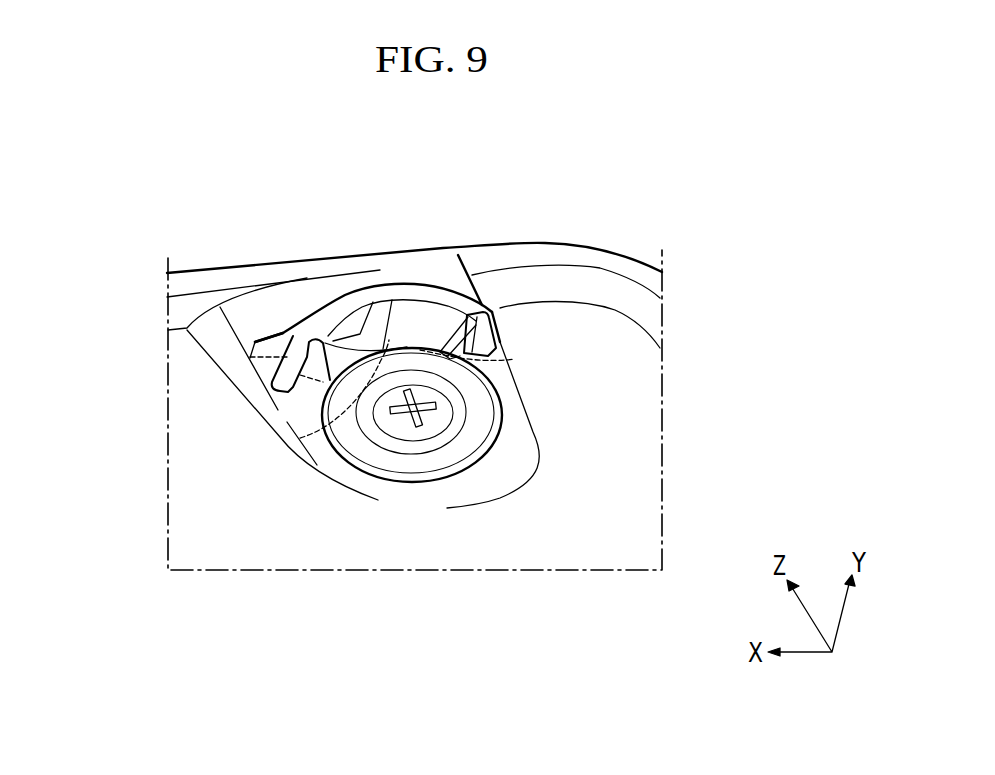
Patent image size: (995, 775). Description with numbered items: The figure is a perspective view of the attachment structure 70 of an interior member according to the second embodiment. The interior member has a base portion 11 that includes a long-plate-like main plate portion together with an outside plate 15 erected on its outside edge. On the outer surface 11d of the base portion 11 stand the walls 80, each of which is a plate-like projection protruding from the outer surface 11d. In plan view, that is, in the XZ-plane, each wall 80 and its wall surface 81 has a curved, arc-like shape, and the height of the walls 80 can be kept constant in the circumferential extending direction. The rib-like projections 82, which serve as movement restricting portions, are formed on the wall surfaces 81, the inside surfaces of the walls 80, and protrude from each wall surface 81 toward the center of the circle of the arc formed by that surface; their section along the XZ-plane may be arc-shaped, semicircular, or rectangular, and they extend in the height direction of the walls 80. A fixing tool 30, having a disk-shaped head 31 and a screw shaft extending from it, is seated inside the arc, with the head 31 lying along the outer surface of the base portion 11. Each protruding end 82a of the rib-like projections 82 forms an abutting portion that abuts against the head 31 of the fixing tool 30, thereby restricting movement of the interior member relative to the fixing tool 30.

The base portion 11 is at (613, 550).
The outside plate 15 is at (414, 371).
The outer surface 11d is at (530, 443).
The attachment structure 70 is at (487, 207).
The wall 80 is at (327, 304).
The wall surface 81 is at (430, 310).
The rib-like projection 82 is at (490, 358).
The protruding end 82a is at (490, 396).
The fixing tool 30 is at (410, 483).
The head 31 is at (411, 412).